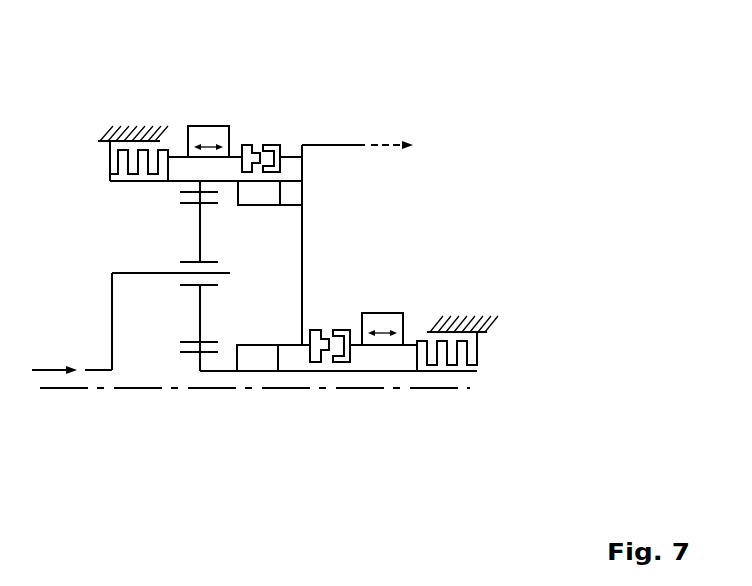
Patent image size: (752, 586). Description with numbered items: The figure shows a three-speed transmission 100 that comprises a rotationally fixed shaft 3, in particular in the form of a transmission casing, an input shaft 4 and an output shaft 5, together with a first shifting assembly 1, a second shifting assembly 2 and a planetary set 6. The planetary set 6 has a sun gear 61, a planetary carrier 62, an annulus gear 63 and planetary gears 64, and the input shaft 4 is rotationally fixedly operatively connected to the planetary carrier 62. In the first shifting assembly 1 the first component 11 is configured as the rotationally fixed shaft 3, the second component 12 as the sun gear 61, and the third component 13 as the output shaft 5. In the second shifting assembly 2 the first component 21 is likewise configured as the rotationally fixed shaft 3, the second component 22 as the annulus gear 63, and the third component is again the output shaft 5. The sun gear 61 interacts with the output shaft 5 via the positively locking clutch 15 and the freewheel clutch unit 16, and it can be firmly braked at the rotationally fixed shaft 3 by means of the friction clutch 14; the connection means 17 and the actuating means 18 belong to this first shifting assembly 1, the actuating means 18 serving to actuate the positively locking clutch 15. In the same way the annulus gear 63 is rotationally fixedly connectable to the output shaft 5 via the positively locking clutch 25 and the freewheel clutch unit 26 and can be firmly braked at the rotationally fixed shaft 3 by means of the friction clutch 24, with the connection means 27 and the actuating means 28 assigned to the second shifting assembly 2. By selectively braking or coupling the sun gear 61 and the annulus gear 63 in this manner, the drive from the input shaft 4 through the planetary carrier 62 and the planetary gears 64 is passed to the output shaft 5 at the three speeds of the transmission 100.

The transmission 100 is at (325, 247).
The first shifting assembly 1 is at (513, 295).
The second shifting assembly 2 is at (253, 95).
The rotationally fixed shaft 3 is at (133, 138).
The input shaft 4 is at (97, 371).
The output shaft 5 is at (323, 145).
The planetary set 6 is at (173, 226).
The first component 11 is at (473, 317).
The second component 12 is at (338, 392).
The third component 13 is at (303, 229).
The friction clutch 14 is at (482, 350).
The positively locking clutch 15 is at (376, 365).
The freewheel clutch unit 16 is at (250, 365).
The connection means 17 is at (356, 347).
The actuating means 18 is at (398, 313).
The first component 21 is at (124, 84).
The second component 22 is at (161, 180).
The friction clutch 24 is at (106, 160).
The positively locking clutch 25 is at (252, 137).
The freewheel clutch unit 26 is at (270, 198).
The connection means 27 is at (242, 155).
The actuating means 28 is at (192, 126).
The sun gear 61 is at (330, 372).
The planetary carrier 62 is at (157, 273).
The annulus gear 63 is at (173, 181).
The planetary gear 64 is at (200, 317).